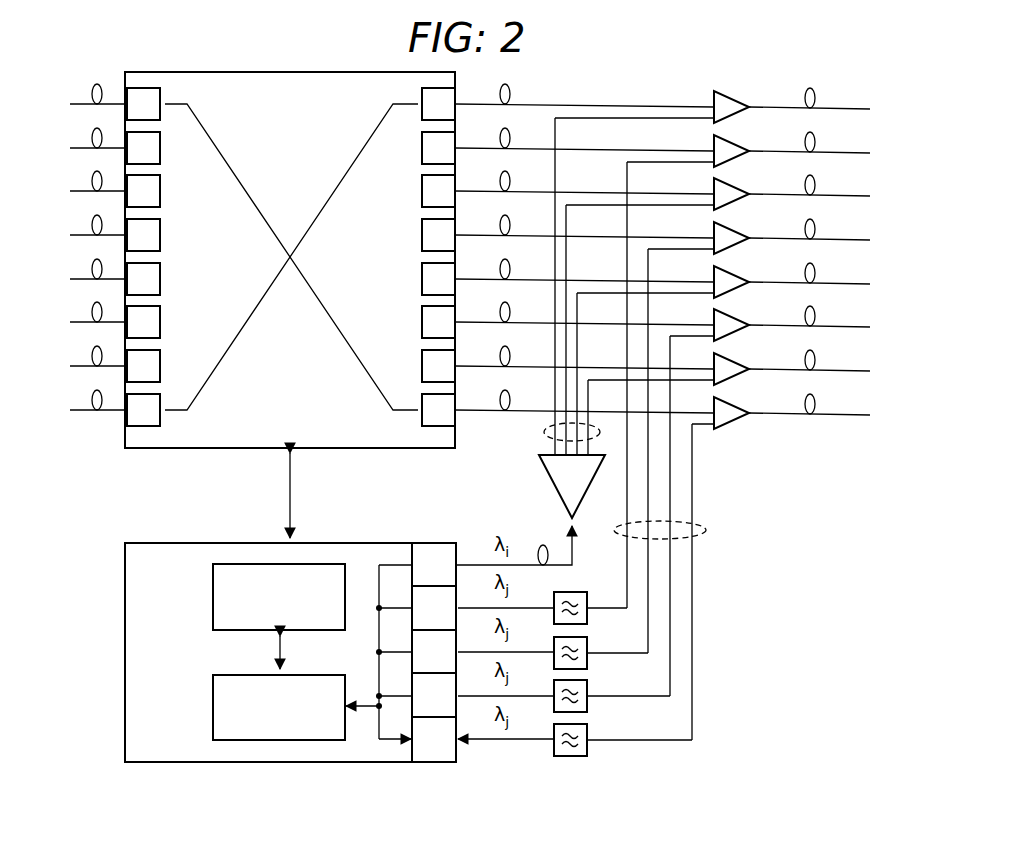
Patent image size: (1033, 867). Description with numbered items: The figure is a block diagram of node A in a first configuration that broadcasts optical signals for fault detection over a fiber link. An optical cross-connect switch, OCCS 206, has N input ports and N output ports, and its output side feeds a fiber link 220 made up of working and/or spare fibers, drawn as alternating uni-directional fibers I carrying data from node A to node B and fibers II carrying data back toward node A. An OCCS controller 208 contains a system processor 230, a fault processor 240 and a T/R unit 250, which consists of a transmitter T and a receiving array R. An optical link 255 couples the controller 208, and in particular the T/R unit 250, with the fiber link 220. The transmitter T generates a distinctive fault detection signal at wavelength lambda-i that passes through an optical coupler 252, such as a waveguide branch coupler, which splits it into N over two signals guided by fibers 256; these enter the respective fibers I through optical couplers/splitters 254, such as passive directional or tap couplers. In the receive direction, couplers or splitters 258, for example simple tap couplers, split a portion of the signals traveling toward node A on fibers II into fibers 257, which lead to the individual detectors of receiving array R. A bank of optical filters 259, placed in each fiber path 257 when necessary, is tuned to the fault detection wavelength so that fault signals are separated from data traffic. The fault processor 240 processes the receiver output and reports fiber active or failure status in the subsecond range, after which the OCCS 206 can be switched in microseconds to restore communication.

The OCCS 206 is at (262, 260).
The OCCS controller 208 is at (233, 652).
The fiber link 220 is at (828, 71).
The system processor 230 is at (213, 598).
The fault processor 240 is at (213, 705).
The T/R unit 250 is at (432, 543).
The optical coupler 252 is at (556, 487).
The optical couplers/splitters 254 is at (752, 80).
The optical link 255 is at (720, 451).
The fibers 256 is at (546, 432).
The fibers 257 is at (707, 532).
The couplers or splitters 258 is at (714, 146).
The optical filters 259 is at (591, 770).